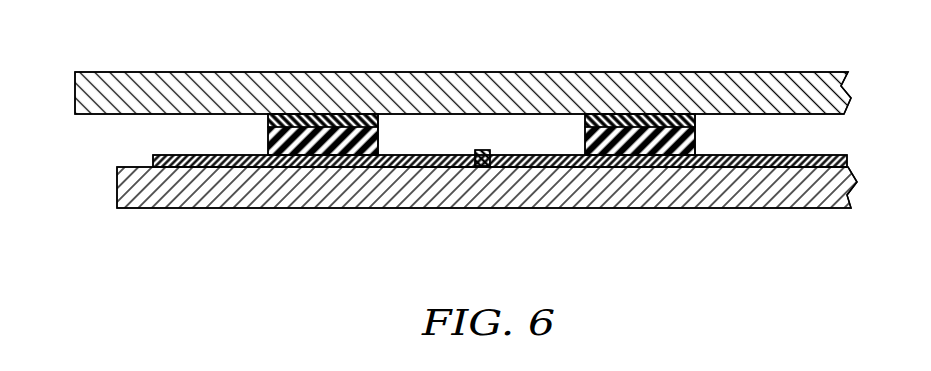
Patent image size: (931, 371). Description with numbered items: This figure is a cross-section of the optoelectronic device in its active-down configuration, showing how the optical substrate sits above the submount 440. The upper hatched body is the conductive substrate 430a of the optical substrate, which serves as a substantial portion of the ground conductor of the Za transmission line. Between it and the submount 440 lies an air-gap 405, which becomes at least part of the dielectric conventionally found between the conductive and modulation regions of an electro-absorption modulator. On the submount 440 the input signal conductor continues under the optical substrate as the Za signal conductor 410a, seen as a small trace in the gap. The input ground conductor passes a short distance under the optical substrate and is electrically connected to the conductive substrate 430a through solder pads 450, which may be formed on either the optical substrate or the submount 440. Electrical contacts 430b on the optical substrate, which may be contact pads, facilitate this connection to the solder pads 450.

The air-gap 405 is at (132, 123).
The Za signal conductor 410a is at (486, 150).
The conductive substrate 430a is at (130, 84).
The electrical contacts 430b is at (353, 113).
The submount 440 is at (201, 200).
The solder pads 450 is at (378, 135).